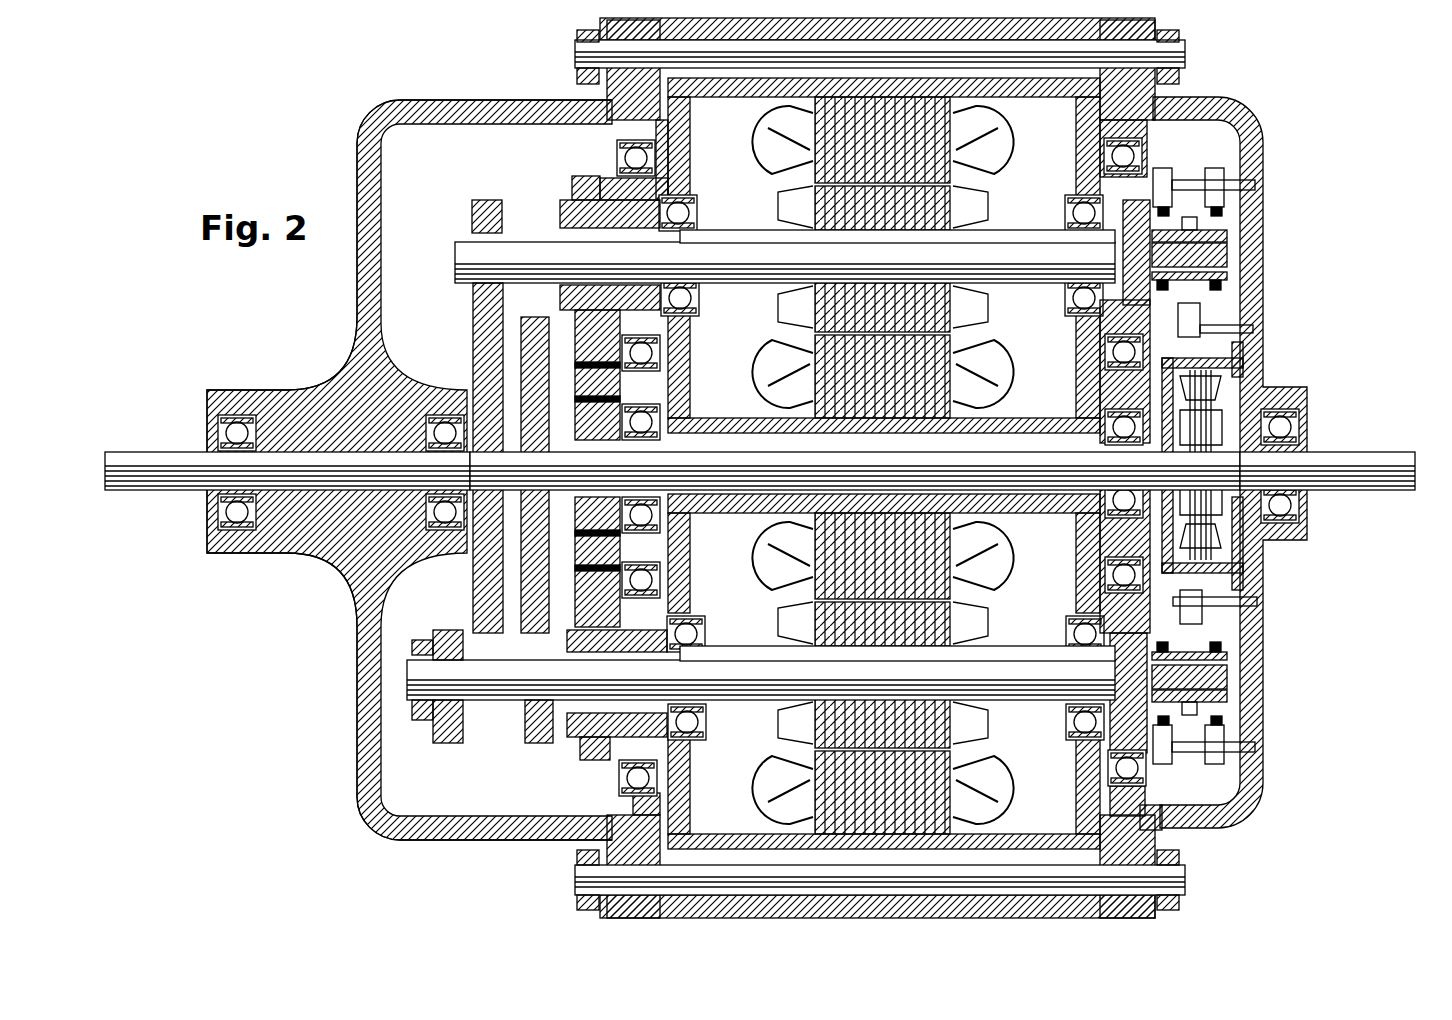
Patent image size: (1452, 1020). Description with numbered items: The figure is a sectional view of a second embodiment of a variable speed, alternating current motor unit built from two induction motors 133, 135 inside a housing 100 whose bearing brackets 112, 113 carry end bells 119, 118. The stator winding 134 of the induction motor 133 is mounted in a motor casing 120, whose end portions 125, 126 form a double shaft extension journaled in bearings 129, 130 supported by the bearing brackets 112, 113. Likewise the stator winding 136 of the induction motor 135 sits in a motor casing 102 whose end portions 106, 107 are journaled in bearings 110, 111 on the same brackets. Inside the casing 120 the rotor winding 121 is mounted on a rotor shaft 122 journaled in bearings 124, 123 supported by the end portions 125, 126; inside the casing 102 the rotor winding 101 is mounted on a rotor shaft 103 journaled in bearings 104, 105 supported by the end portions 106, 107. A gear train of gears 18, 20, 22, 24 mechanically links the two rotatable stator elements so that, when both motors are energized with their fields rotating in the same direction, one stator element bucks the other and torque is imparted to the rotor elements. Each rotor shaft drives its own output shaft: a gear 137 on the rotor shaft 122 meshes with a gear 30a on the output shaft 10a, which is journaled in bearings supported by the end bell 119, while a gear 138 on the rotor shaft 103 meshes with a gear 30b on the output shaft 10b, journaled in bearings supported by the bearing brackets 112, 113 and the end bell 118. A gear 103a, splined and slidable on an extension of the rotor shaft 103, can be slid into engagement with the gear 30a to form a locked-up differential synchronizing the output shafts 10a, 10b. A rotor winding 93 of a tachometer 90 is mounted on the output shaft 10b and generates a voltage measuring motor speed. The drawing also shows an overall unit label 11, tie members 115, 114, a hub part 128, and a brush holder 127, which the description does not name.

The housing 100 is at (450, 861).
The end bell 119 is at (365, 228).
The end bell 118 is at (1258, 682).
The machine assembly 11 is at (1236, 50).
The upper tie shaft 115 is at (578, 55).
The lower tie shaft 114 is at (583, 878).
The bearing bracket 112 is at (613, 847).
The bearing bracket 113 is at (1162, 830).
The bearing 129 is at (620, 150).
The bearing 130 is at (1142, 175).
The bearing 110 is at (620, 779).
The bearing 111 is at (1140, 768).
The motor casing 120 is at (727, 97).
The rotor winding 121 is at (832, 316).
The rotor shaft 122 is at (882, 255).
The bearing 123 is at (1070, 215).
The bearing 124 is at (697, 213).
The end portion 125 is at (698, 173).
The end portion 126 is at (1065, 150).
The induction motor 133 is at (1068, 410).
The stator winding 134 is at (992, 128).
The rotor winding 101 is at (812, 603).
The motor casing 102 is at (730, 516).
The rotor shaft 103 is at (884, 670).
The gear 103a is at (438, 745).
The bearing 104 is at (705, 722).
The bearing 105 is at (1067, 722).
The end portion 106 is at (715, 630).
The end portion 107 is at (1073, 570).
The induction motor 135 is at (1068, 813).
The stator winding 136 is at (948, 577).
The gear 137 is at (472, 218).
The gear 138 is at (533, 727).
The bearing hub 128 is at (565, 300).
The gear 18 is at (585, 195).
The gear 22 is at (600, 430).
The gear 20 is at (600, 497).
The gear 24 is at (580, 762).
The gear 30a is at (487, 604).
The gear 30b is at (520, 572).
The output shaft 10a is at (158, 457).
The output shaft 10b is at (1365, 455).
The brush holder 127 is at (1150, 315).
The tachometer 90 is at (1250, 545).
The rotor winding 93 is at (1223, 517).